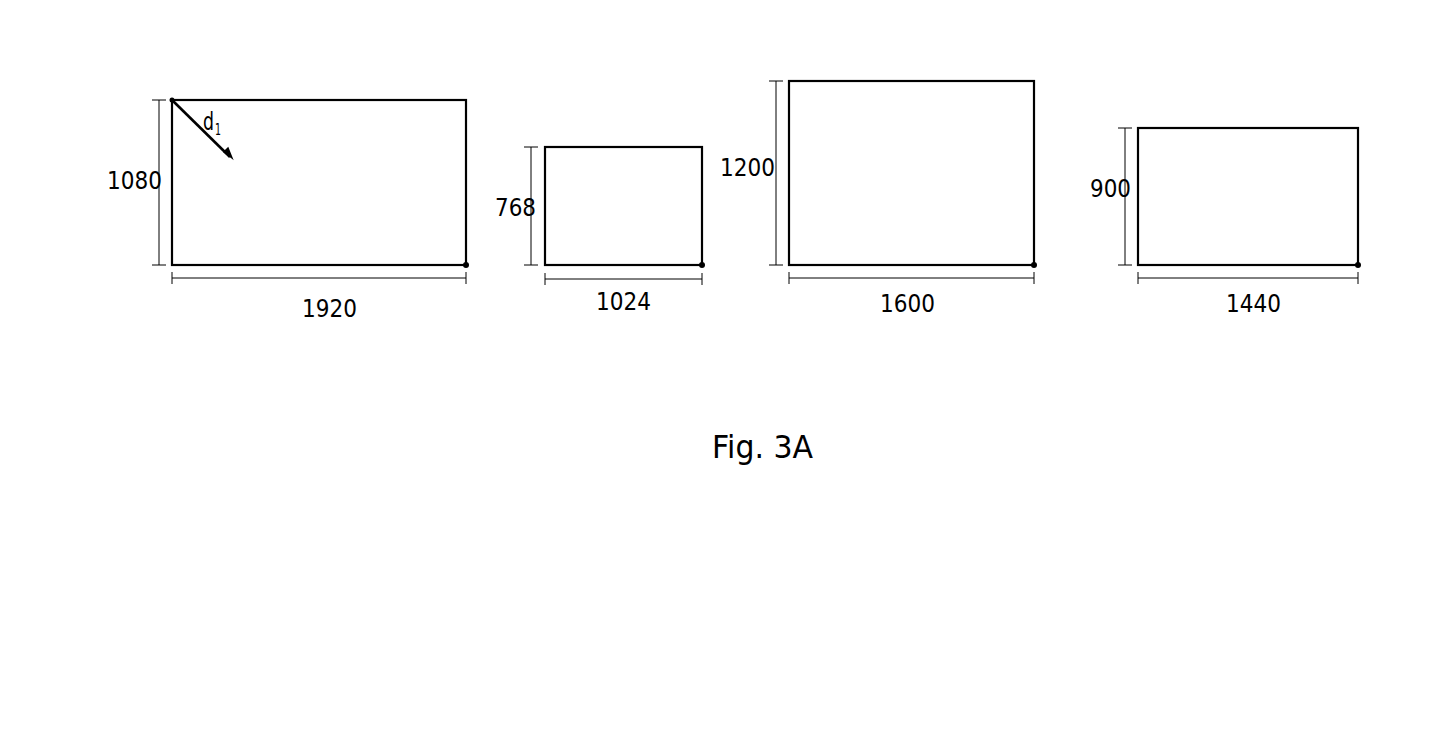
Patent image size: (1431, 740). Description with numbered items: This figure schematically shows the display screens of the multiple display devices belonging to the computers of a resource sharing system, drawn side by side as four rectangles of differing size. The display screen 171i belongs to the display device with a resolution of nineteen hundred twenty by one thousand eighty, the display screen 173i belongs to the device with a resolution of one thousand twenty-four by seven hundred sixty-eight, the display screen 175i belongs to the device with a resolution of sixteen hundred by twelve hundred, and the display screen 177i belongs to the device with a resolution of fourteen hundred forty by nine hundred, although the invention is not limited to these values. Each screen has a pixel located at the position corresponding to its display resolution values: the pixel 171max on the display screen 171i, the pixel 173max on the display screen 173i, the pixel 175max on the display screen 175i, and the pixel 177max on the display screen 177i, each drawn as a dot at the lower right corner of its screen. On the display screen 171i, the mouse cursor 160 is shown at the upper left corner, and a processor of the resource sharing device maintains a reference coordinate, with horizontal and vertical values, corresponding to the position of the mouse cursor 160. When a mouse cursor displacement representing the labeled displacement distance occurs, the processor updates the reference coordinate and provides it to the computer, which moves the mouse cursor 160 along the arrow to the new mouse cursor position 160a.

The mouse cursor 160 is at (172, 100).
The new mouse cursor position 160a is at (233, 155).
The display screen 171i is at (351, 100).
The pixel 171max is at (466, 265).
The display screen 173i is at (635, 147).
The pixel 173max is at (702, 265).
The display screen 175i is at (952, 81).
The pixel 175max is at (1034, 265).
The display screen 177i is at (1296, 128).
The pixel 177max is at (1358, 265).